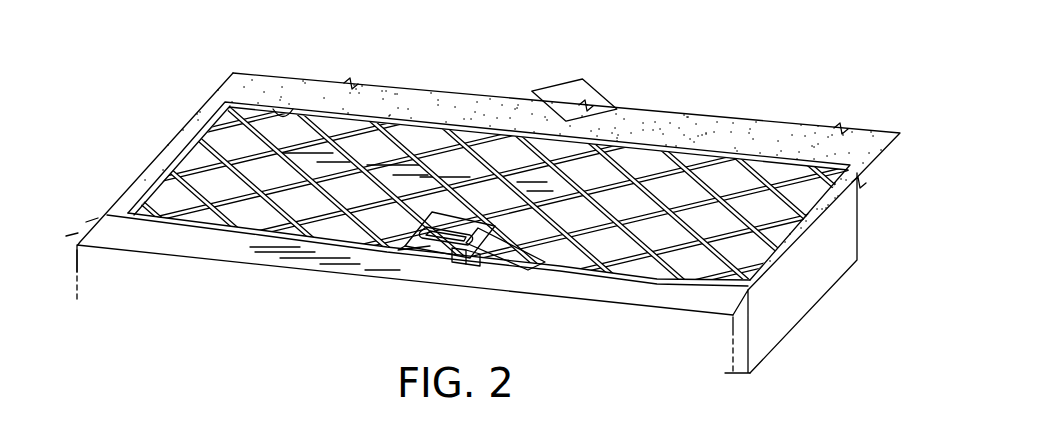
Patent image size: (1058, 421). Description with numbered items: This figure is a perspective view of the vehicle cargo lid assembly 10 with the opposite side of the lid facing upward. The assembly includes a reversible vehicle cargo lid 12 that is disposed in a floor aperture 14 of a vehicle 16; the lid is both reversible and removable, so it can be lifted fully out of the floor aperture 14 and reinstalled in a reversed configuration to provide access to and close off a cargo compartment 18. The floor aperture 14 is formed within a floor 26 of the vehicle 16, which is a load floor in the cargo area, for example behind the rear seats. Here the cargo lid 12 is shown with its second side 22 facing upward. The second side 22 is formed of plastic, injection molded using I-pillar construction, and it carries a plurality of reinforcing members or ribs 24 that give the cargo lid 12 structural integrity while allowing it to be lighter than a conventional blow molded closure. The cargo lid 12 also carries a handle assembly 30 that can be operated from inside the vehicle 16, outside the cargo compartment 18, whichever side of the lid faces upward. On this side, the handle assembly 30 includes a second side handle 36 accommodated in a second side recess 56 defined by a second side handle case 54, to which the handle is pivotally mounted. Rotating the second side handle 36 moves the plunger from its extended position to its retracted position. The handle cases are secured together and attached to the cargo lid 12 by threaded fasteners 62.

The cargo lid assembly 10 is at (556, 60).
The reversible vehicle cargo lid 12 is at (428, 124).
The floor aperture 14 is at (271, 108).
The vehicle 16 is at (783, 315).
The cargo compartment 18 is at (810, 272).
The second side 22 is at (673, 187).
The reinforcing members or ribs 24 is at (705, 177).
The floor 26 is at (383, 97).
The handle assembly 30 is at (404, 262).
The second side handle 36 is at (447, 240).
The second side handle case 54 is at (480, 255).
The second side recess 56 is at (465, 215).
The threaded fasteners 62 is at (545, 262).